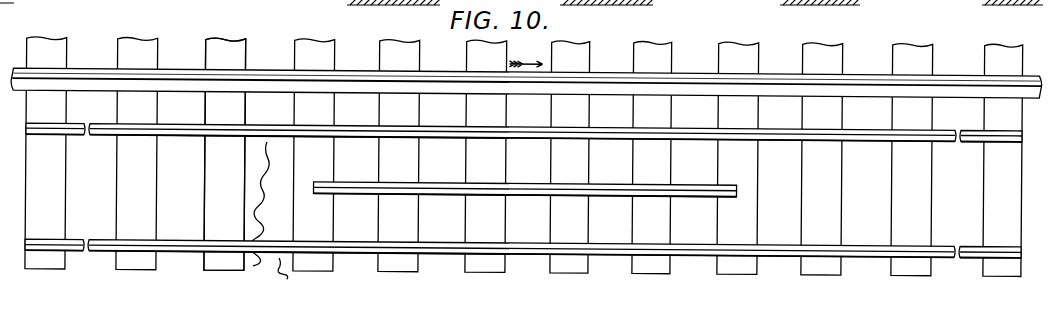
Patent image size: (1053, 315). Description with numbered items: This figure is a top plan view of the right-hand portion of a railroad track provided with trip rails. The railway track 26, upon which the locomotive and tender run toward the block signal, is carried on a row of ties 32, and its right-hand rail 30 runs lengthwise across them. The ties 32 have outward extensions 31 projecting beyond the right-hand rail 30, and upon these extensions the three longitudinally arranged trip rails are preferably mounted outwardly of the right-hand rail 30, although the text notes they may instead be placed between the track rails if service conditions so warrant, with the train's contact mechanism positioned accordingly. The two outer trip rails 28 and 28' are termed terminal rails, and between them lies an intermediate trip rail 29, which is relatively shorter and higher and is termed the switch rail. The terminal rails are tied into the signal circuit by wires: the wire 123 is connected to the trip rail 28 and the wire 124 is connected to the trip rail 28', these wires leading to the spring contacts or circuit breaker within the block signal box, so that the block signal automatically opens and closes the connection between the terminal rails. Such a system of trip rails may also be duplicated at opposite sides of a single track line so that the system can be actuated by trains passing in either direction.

The railway track 26 is at (524, 157).
The ties 32 is at (225, 154).
The outward extensions 31 is at (225, 154).
The right-hand rail 30 is at (791, 82).
The trip rail 28 is at (524, 126).
The trip rail 28' is at (523, 240).
The trip rail 29 is at (521, 190).
The wire 123 is at (256, 273).
The wire 124 is at (290, 276).